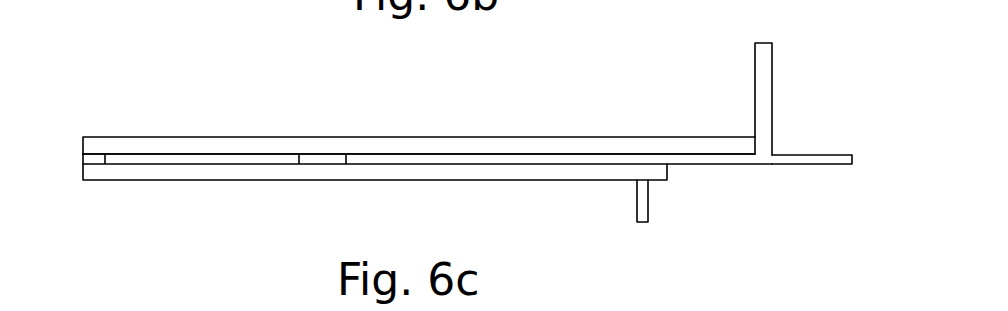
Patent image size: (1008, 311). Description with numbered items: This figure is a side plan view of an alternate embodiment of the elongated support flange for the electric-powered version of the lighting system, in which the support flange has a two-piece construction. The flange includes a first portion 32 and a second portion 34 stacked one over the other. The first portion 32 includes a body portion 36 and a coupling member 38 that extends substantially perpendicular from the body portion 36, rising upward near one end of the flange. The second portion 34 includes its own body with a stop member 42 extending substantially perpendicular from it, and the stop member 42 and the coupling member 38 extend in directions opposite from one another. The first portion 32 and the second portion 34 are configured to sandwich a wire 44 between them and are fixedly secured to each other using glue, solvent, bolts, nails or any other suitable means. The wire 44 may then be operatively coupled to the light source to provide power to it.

The first portion 32 is at (152, 137).
The second portion 34 is at (140, 180).
The body portion 36 is at (338, 143).
The coupling member 38 is at (772, 72).
The stop member 42 is at (659, 202).
The wire 44 is at (813, 164).